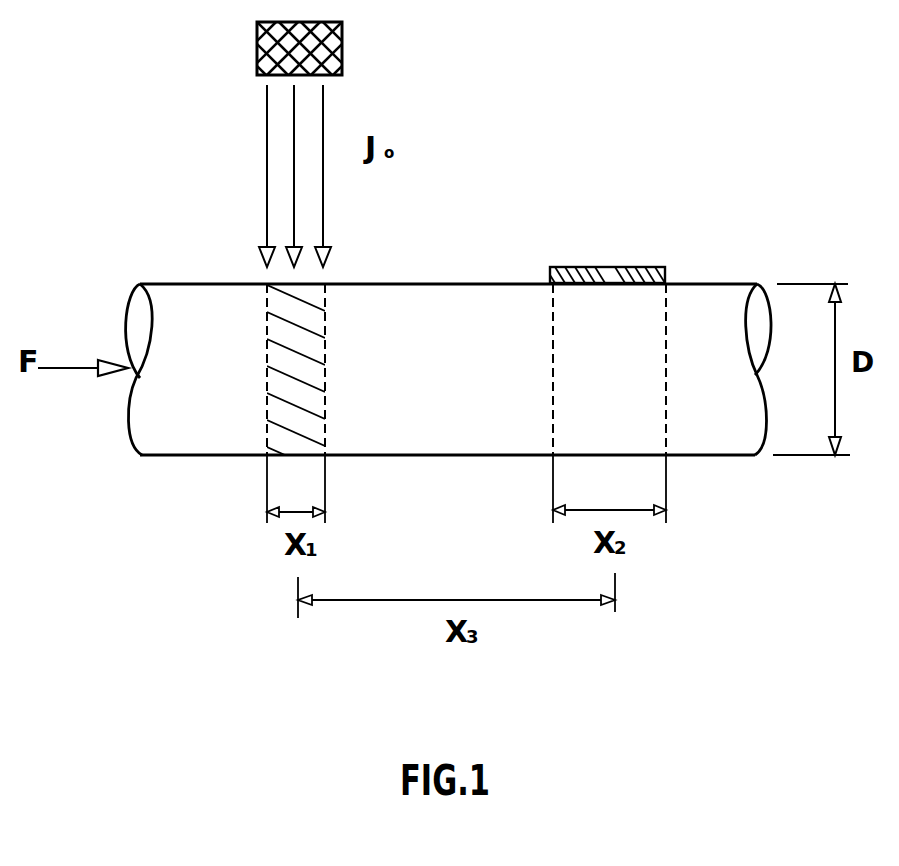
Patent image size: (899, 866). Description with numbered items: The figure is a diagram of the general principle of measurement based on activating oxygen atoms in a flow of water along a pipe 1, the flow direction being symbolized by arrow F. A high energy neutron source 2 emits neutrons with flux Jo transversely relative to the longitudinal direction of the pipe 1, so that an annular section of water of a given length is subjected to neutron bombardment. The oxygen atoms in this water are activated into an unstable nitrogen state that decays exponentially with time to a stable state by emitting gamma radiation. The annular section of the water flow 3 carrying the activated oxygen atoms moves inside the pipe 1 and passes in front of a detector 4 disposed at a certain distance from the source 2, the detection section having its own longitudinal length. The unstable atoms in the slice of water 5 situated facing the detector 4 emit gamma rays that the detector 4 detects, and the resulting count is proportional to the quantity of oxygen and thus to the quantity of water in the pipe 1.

The pipe 1 is at (448, 292).
The high energy neutron source 2 is at (265, 50).
The annular section of the water flow 3 is at (307, 423).
The detector 4 is at (602, 282).
The slice of water 5 is at (640, 430).